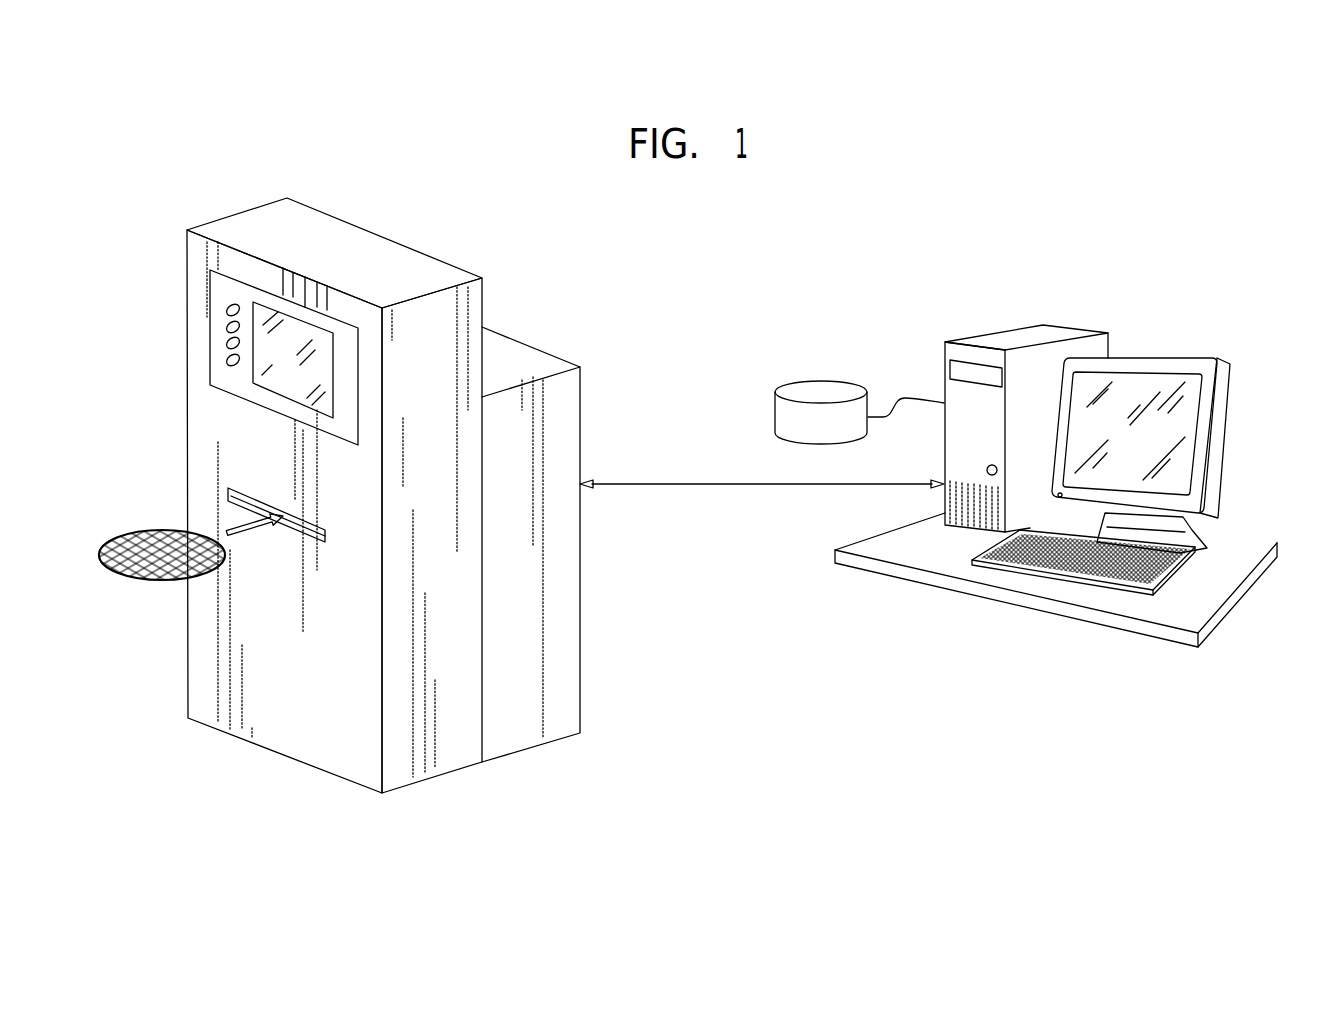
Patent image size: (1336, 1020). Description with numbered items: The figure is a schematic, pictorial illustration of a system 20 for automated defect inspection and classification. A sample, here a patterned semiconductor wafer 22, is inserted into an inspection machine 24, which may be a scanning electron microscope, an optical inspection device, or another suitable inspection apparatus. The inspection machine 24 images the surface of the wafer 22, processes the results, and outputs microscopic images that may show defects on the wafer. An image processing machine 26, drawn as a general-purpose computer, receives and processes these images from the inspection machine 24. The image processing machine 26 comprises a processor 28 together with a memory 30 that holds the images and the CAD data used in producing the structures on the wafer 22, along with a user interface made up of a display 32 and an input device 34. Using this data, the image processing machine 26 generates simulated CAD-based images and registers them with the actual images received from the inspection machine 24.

The system 20 is at (377, 110).
The patterned semiconductor wafer 22 is at (130, 548).
The inspection machine 24 is at (232, 216).
The image processing machine 26 is at (1260, 655).
The processor 28 is at (985, 337).
The memory 30 is at (829, 381).
The display 32 is at (1172, 355).
The input device 34 is at (973, 562).